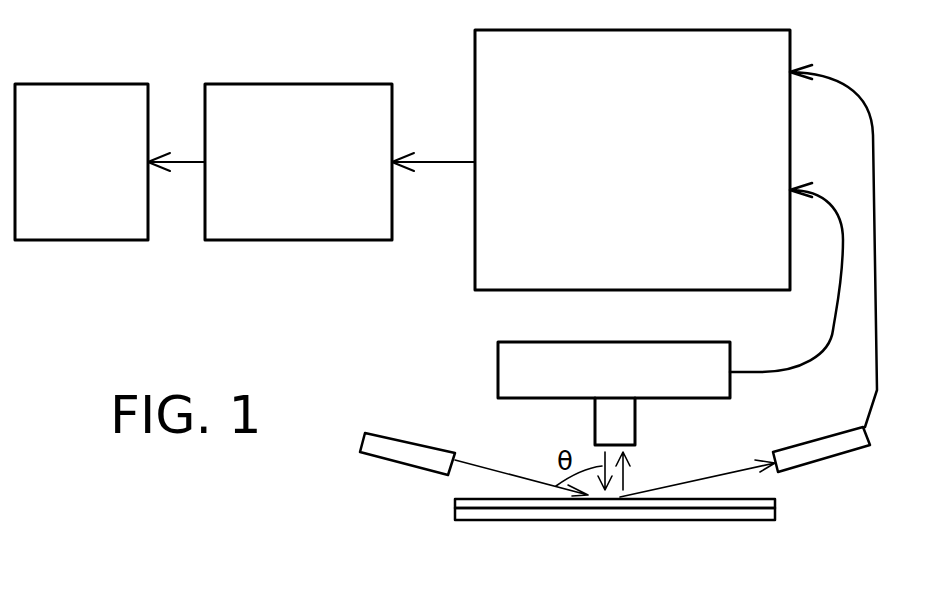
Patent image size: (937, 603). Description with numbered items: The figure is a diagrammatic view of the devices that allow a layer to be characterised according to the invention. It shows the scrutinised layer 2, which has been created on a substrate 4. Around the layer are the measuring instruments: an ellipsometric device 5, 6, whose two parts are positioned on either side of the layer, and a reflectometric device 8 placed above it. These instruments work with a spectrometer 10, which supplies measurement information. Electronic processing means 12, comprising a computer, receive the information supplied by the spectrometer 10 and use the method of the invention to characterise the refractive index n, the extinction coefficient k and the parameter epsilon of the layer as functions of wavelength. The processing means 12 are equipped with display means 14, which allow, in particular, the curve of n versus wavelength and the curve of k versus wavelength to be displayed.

The scrutinised layer 2 is at (495, 506).
The substrate 4 is at (718, 512).
The ellipsometric device 5 is at (407, 462).
The ellipsometric device 6 is at (823, 458).
The reflectometric device 8 is at (500, 377).
The spectrometer 10 is at (485, 80).
The electronic processing means 12 is at (280, 233).
The display means 14 is at (124, 233).